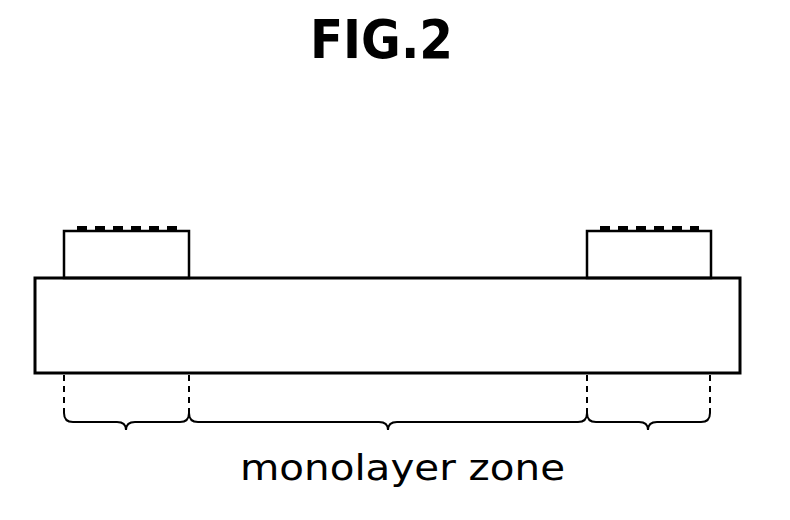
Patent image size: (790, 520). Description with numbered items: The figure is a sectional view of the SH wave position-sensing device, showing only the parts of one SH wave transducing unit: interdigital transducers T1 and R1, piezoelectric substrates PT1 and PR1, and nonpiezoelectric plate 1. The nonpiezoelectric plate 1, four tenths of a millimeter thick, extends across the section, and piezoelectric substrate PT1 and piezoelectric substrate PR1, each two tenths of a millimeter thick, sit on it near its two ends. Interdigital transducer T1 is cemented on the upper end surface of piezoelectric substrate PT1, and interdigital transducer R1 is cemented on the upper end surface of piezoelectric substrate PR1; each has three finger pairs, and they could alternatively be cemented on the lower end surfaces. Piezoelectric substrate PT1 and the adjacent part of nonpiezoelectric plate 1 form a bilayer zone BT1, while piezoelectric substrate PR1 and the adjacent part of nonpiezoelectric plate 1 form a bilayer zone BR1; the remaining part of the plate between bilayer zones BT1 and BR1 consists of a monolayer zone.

The nonpiezoelectric plate 1 is at (465, 312).
The interdigital transducer T1 is at (170, 226).
The piezoelectric substrate PT1 is at (178, 250).
The interdigital transducer R1 is at (602, 225).
The piezoelectric substrate PR1 is at (638, 248).
The bilayer zone BT1 is at (126, 433).
The bilayer zone BR1 is at (648, 433).